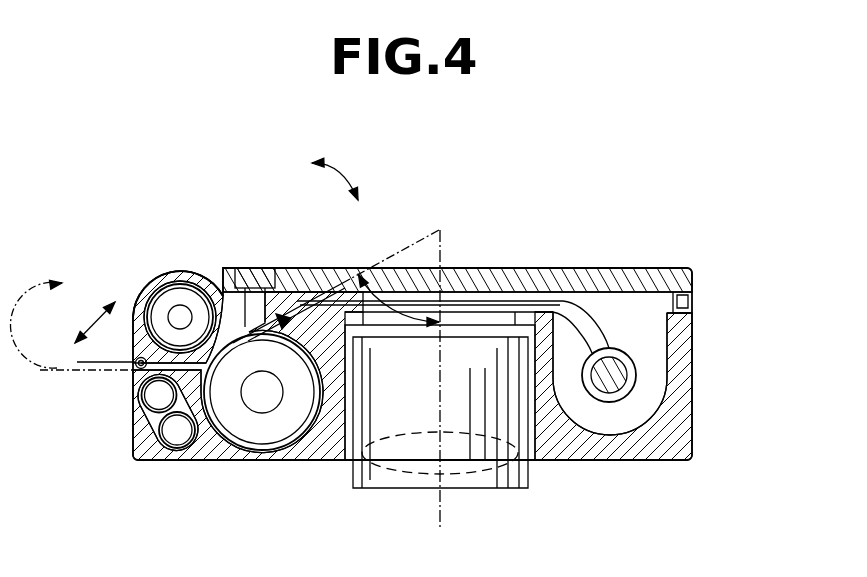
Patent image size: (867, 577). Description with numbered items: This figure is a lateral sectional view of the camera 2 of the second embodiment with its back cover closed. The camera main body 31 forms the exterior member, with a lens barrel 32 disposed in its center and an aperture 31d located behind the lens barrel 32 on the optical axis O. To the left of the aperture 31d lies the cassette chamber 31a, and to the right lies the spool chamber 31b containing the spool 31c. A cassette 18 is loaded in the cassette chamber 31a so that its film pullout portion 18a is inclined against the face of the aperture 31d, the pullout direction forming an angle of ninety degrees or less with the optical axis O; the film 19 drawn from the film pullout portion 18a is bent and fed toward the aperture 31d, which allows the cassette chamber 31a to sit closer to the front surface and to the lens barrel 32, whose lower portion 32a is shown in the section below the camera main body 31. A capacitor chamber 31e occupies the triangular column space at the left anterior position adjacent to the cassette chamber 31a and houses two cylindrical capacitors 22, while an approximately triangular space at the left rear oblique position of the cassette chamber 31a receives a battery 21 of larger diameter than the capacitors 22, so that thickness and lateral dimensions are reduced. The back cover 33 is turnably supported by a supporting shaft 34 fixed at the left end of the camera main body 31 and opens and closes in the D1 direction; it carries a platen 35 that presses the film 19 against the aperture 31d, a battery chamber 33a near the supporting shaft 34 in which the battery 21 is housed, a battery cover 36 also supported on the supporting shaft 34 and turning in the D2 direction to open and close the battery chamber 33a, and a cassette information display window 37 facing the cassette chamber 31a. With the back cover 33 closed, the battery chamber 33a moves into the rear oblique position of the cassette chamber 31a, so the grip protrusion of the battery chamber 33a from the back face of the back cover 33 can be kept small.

The camera 2 is at (668, 237).
The cassette 18 is at (238, 423).
The film pullout portion 18a is at (283, 316).
The film 19 is at (583, 308).
The battery 21 is at (158, 283).
The capacitors 22 is at (168, 430).
The camera main body 31 is at (613, 450).
The cassette chamber 31a is at (267, 461).
The spool chamber 31b is at (647, 418).
The spool 31c is at (622, 384).
The aperture 31d is at (472, 268).
The capacitor chamber 31e is at (177, 452).
The lens barrel 32 is at (530, 480).
The bottom opening 32a is at (383, 488).
The back cover 33 is at (624, 268).
The battery chamber 33a is at (204, 275).
The supporting shaft 34 is at (137, 368).
The platen 35 is at (498, 298).
The battery cover 36 is at (183, 268).
The cassette information display window 37 is at (258, 270).
The D1 direction D1 is at (340, 170).
The D2 direction D2 is at (95, 316).
The optical axis O is at (442, 508).